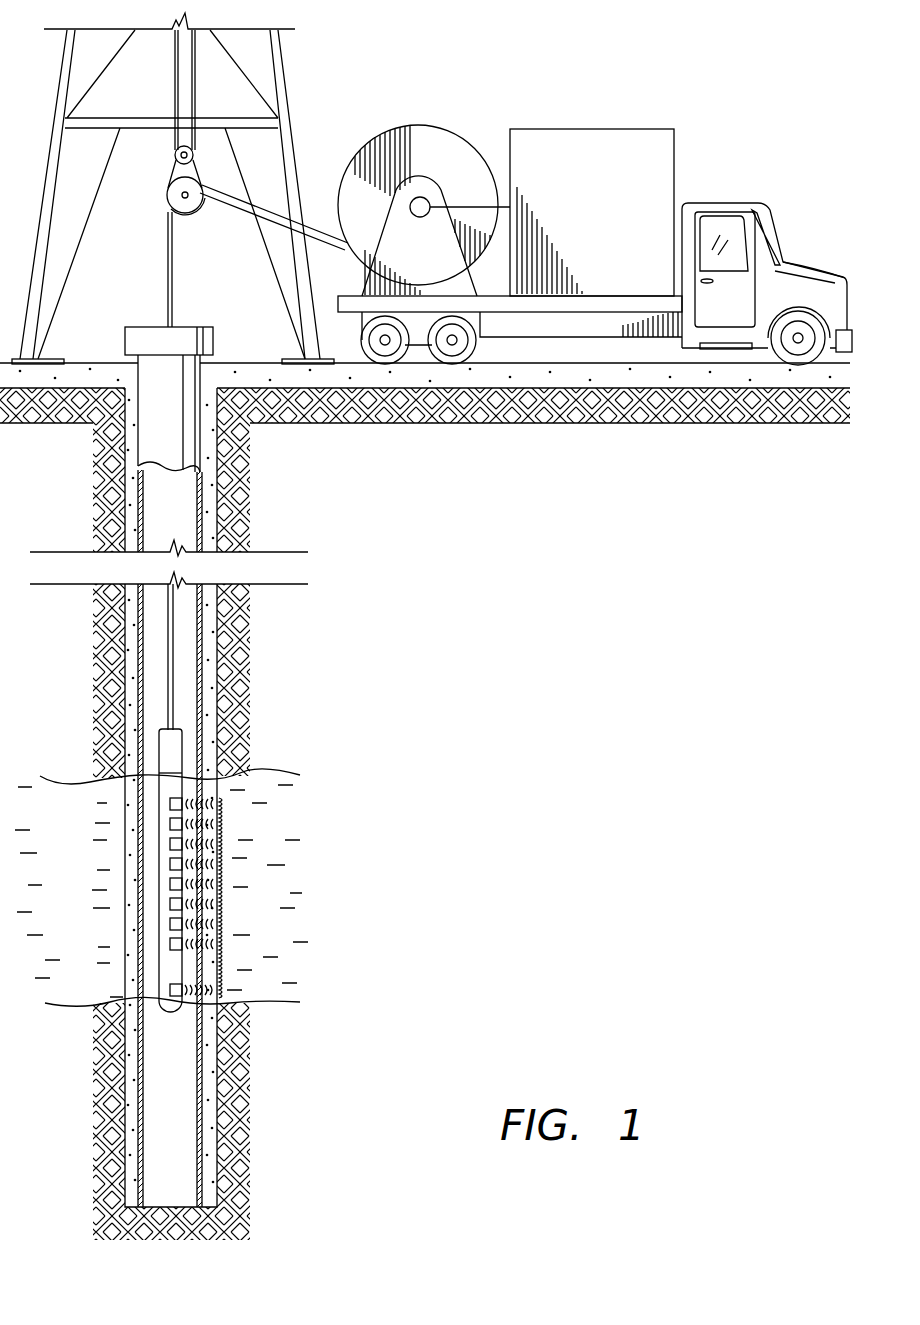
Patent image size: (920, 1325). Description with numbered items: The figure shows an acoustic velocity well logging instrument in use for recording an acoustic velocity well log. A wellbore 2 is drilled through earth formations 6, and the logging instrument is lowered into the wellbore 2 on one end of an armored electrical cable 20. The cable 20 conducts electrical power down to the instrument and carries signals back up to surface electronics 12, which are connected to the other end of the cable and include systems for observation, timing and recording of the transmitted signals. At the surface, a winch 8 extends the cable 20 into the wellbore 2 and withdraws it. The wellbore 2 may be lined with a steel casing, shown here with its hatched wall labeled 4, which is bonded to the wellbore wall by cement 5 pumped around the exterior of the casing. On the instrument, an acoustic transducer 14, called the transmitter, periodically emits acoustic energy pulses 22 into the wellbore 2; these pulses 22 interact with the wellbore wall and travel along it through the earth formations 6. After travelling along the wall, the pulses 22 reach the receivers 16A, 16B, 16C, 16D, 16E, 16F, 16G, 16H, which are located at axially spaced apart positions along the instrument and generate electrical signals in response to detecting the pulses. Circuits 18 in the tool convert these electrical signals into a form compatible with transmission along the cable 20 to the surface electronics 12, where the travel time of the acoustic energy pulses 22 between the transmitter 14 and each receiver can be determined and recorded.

The wellbore 2 is at (160, 515).
The casing 4 is at (158, 622).
The cement 5 is at (125, 645).
The earth formations 6 is at (262, 918).
The winch 8 is at (372, 142).
The surface electronics 12 is at (598, 128).
The acoustic transducer 14 is at (170, 990).
The receiver 16A is at (170, 943).
The receiver 16B is at (170, 923).
The receiver 16C is at (170, 903).
The receiver 16D is at (170, 883).
The receiver 16E is at (170, 863).
The receiver 16F is at (170, 843).
The receiver 16G is at (170, 823).
The receiver 16H is at (170, 803).
The circuits 18 is at (165, 748).
The armored electrical cable 20 is at (178, 297).
The acoustic energy pulses 22 is at (226, 830).